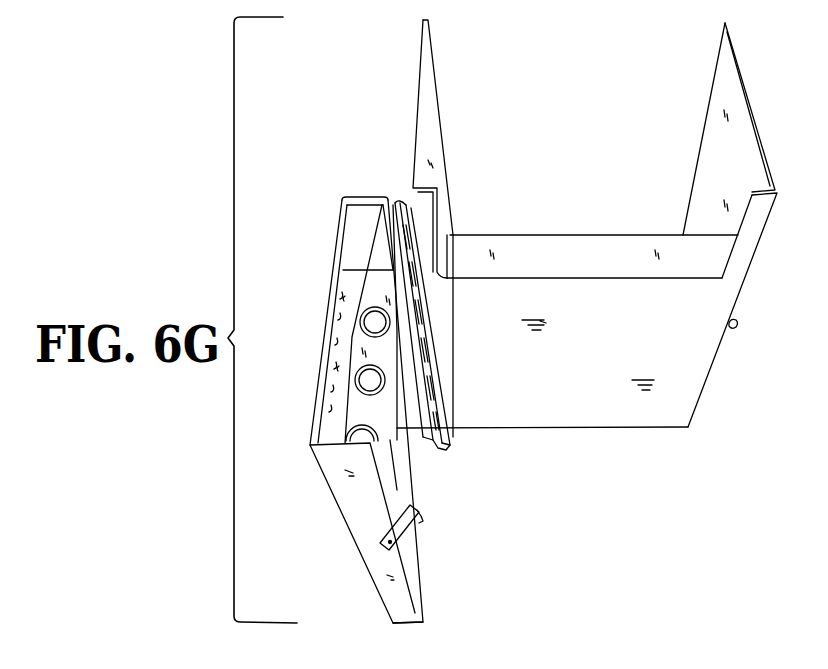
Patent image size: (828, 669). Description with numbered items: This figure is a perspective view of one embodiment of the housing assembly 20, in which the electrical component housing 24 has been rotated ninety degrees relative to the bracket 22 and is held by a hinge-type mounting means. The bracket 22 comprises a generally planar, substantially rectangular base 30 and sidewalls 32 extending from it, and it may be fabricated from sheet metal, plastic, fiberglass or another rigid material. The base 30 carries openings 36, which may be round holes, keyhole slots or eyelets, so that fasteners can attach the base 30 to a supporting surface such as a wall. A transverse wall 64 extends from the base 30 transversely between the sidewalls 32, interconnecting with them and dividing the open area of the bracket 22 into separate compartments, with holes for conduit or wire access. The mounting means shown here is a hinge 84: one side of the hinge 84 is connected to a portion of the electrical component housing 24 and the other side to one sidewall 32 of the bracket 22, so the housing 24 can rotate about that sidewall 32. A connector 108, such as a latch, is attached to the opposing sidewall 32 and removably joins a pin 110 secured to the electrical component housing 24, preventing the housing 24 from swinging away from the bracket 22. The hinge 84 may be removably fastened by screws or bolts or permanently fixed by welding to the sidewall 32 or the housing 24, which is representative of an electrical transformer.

The housing assembly 20 is at (351, 135).
The bracket 22 is at (309, 260).
The electrical component housing 24 is at (756, 65).
The base 30 is at (323, 420).
The sidewalls 32 is at (357, 205).
The openings 36 is at (323, 331).
The transverse wall 64 is at (368, 287).
The hinge 84 is at (447, 440).
The connector 108 is at (412, 532).
The pin 110 is at (739, 330).